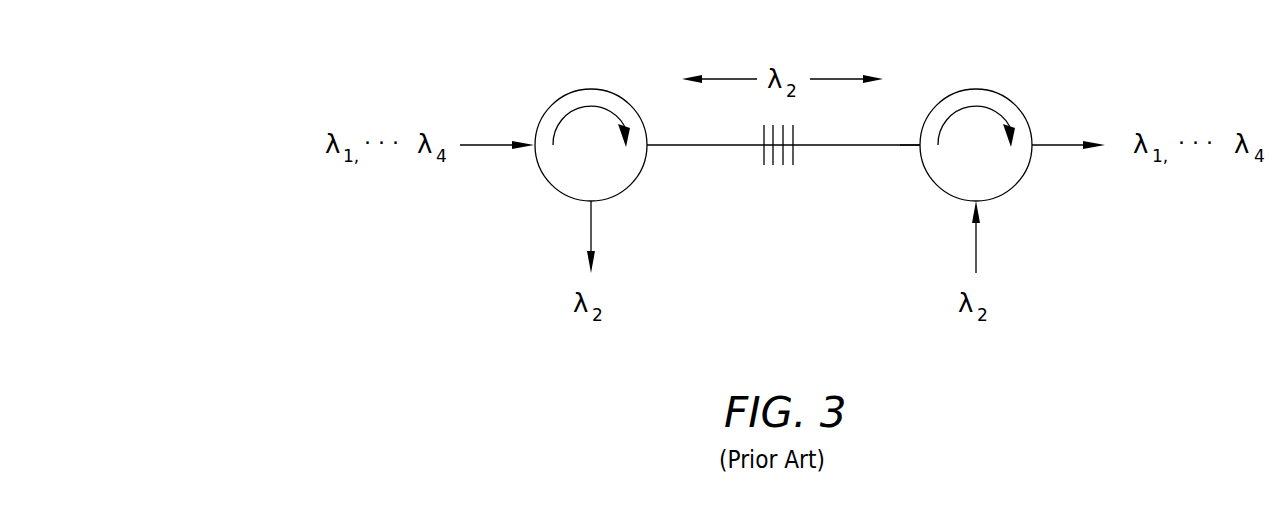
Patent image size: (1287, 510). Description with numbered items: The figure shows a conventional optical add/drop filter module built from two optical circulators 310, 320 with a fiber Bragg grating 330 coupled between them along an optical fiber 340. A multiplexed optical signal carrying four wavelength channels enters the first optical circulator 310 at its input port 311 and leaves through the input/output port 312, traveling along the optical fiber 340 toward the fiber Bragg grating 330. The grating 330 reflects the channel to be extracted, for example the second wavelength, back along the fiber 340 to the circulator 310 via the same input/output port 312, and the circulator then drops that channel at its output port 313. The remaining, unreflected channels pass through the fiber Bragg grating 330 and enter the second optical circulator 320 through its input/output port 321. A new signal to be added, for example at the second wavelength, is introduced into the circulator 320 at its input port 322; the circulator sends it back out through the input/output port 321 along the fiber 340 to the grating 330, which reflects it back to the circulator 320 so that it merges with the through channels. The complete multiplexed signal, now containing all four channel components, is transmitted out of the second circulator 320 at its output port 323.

The optical circulator 310 is at (590, 88).
The input port 311 is at (534, 141).
The input/output port 312 is at (648, 139).
The output port 313 is at (587, 220).
The optical circulator 320 is at (976, 88).
The input/output port 321 is at (921, 143).
The input port 322 is at (979, 203).
The output port 323 is at (1033, 141).
The fiber Bragg grating 330 is at (800, 210).
The optical fiber 340 is at (683, 150).